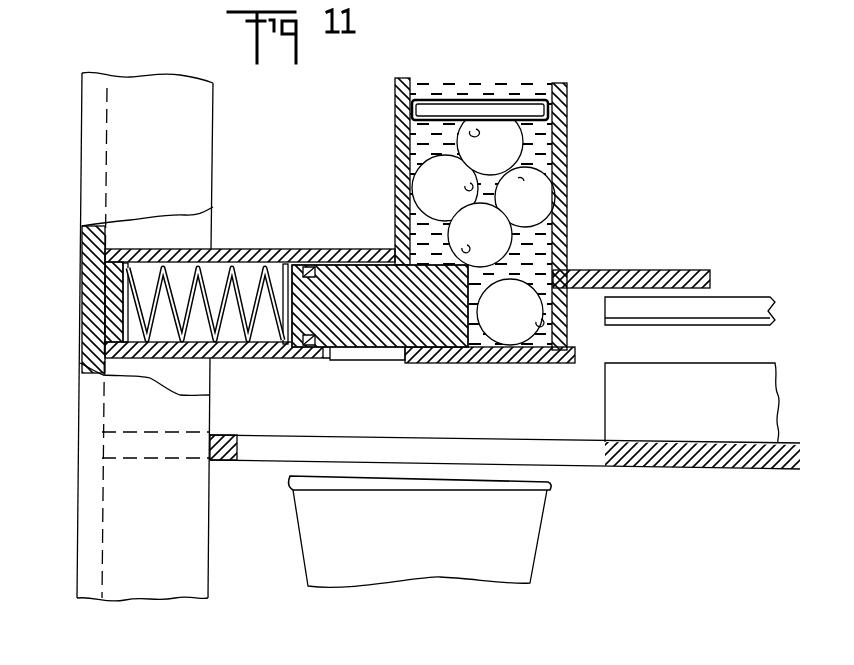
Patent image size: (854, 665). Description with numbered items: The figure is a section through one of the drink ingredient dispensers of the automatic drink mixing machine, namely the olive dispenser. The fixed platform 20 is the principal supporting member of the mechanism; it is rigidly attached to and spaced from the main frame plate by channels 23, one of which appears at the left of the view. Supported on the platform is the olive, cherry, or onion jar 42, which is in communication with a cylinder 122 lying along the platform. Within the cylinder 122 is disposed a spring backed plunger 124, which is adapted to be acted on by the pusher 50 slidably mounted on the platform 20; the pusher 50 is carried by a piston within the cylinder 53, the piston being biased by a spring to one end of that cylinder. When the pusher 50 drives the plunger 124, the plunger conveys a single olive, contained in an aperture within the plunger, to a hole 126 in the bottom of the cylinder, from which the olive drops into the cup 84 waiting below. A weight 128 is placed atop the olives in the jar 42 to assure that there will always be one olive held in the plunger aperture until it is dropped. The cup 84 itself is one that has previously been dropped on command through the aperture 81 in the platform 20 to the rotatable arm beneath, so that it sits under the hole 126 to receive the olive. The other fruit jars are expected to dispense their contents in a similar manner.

The channel 23 is at (90, 118).
The cylinder 122 is at (250, 250).
The spring backed plunger 124 is at (356, 292).
The hole 126 is at (330, 352).
The olive jar 42 is at (398, 132).
The weight 128 is at (487, 108).
The pusher element 50 is at (748, 303).
The cylinder 53 is at (740, 378).
The fixed platform 20 is at (693, 457).
The aperture 81 is at (237, 440).
The cup 84 is at (513, 530).